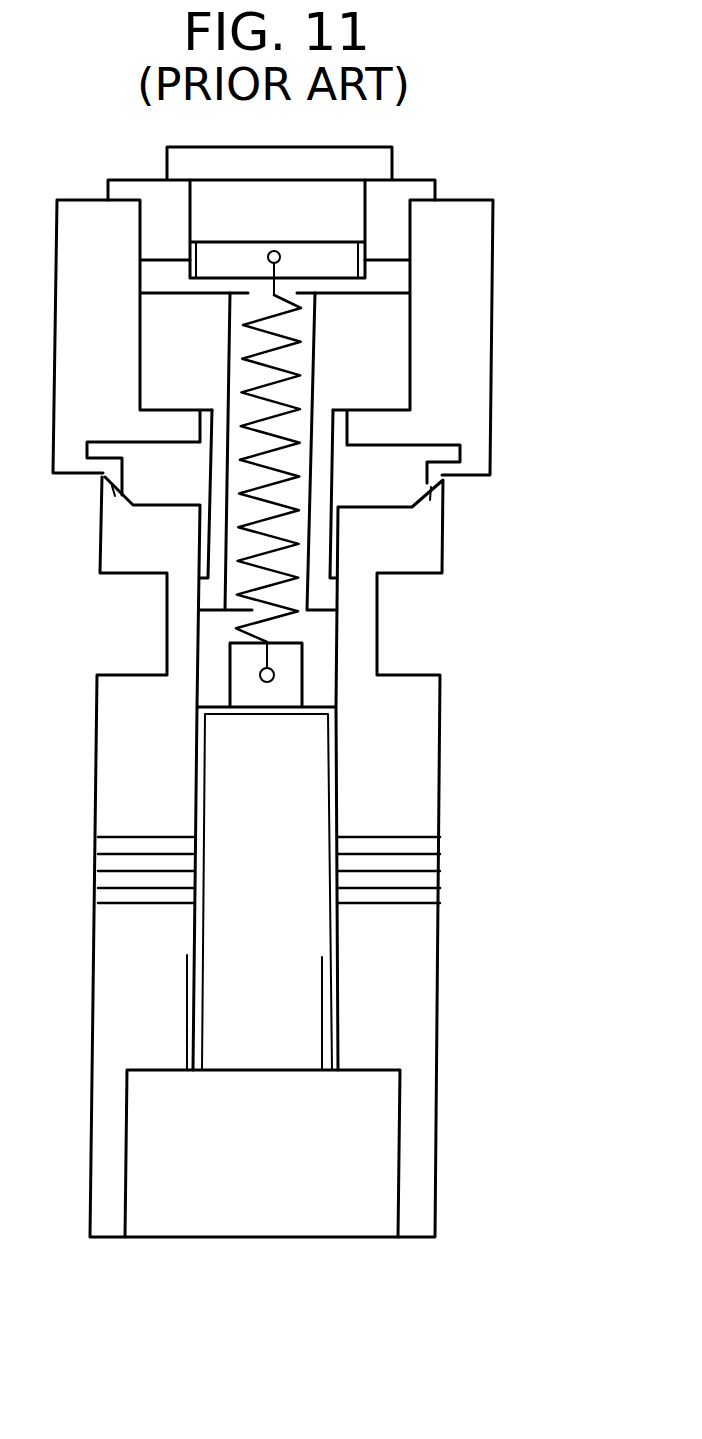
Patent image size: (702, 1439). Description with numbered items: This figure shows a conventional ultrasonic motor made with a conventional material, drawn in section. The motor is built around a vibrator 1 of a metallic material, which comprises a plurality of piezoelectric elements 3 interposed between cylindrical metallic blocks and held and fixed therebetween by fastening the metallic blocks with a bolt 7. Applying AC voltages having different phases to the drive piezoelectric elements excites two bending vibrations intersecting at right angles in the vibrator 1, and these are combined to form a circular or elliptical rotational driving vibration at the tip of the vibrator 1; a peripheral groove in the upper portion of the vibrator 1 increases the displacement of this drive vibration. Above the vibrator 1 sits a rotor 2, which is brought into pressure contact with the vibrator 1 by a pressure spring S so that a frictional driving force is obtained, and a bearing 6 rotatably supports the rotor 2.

The vibrator 1 is at (430, 540).
The rotor 2 is at (480, 333).
The piezoelectric elements 3 is at (453, 835).
The bearing 6 is at (411, 190).
The bolt 7 is at (293, 1222).
The pressure spring S is at (287, 333).